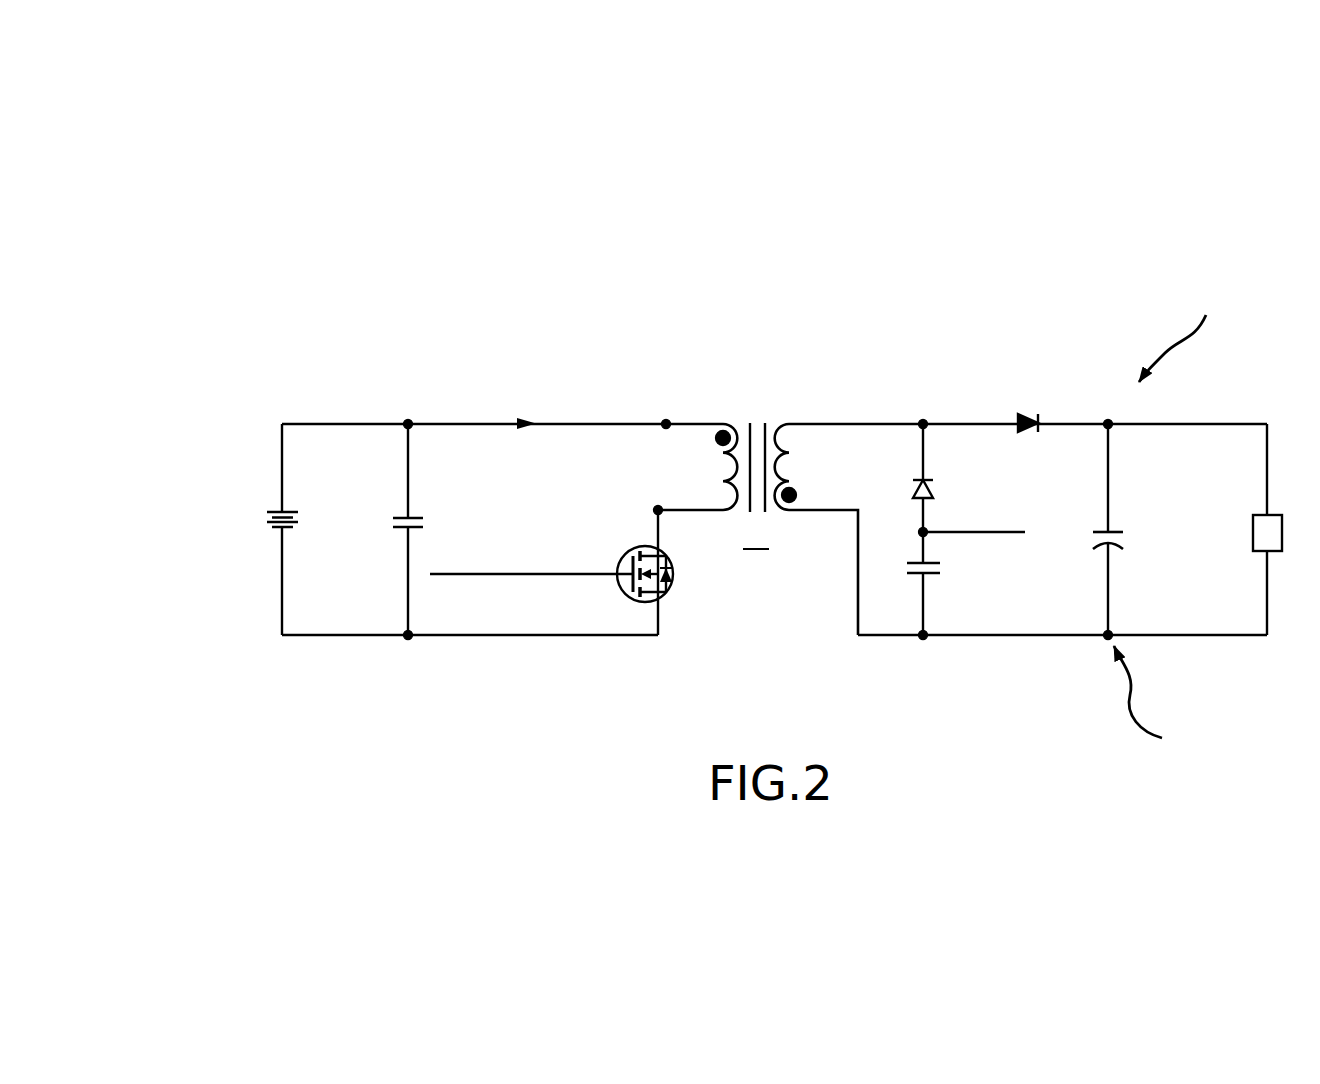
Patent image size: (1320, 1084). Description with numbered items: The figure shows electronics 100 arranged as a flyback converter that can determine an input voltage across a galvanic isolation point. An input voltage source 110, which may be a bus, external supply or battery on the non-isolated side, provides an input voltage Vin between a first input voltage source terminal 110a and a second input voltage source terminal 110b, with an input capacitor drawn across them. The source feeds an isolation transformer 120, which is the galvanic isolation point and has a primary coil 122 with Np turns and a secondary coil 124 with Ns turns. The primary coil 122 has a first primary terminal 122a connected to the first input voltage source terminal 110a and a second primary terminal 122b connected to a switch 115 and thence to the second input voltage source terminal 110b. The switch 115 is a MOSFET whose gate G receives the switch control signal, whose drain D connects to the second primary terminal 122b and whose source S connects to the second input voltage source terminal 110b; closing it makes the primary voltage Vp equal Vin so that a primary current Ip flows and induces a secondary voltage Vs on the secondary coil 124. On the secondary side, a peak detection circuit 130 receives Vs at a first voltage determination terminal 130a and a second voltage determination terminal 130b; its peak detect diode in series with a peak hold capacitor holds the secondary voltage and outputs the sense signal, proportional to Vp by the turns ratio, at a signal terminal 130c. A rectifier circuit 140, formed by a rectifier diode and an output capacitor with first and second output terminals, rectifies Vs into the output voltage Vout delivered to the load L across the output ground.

The electronics 100 is at (280, 385).
The input voltage source 110 is at (228, 490).
The first input voltage source terminal 110a is at (408, 412).
The second input voltage source terminal 110b is at (408, 646).
The switch 115 is at (693, 603).
The isolation transformer 120 is at (773, 408).
The primary coil 122 is at (718, 414).
The first primary terminal 122a is at (662, 412).
The second primary terminal 122b is at (668, 519).
The secondary coil 124 is at (798, 522).
The peak detection circuit 130 is at (969, 592).
The first voltage determination terminal 130a is at (927, 413).
The second voltage determination terminal 130b is at (923, 647).
The signal terminal 130c is at (913, 535).
The rectifier circuit 140 is at (1093, 302).